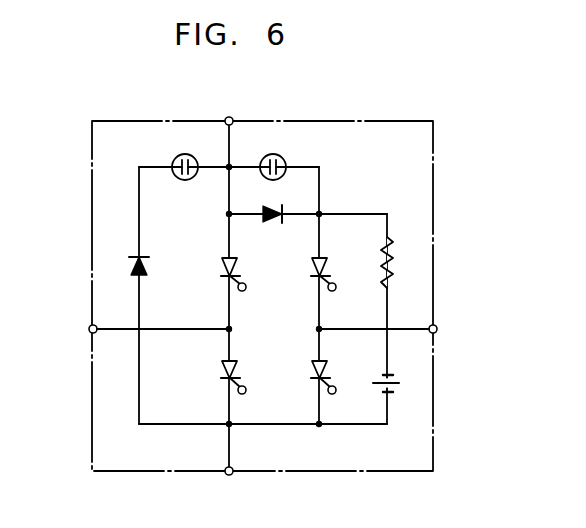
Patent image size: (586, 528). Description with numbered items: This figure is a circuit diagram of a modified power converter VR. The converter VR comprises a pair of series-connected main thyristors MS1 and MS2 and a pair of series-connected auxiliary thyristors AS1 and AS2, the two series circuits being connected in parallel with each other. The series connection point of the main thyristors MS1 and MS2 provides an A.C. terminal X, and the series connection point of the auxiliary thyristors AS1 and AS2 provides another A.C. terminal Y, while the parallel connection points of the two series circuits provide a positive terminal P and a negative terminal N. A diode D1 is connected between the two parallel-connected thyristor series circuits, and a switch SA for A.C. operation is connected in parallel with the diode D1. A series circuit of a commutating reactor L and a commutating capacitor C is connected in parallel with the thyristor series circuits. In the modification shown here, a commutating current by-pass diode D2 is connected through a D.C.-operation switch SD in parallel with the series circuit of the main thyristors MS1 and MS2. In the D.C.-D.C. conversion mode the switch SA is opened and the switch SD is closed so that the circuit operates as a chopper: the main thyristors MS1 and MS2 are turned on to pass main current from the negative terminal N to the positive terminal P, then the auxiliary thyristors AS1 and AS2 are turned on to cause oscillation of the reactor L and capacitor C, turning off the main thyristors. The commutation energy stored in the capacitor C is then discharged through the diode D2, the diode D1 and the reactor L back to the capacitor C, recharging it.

The power converter VR is at (356, 121).
The negative terminal N is at (229, 117).
The positive terminal P is at (230, 475).
The A.C. terminal X is at (90, 332).
The A.C. terminal Y is at (436, 332).
The D.C.-operation switch SD is at (181, 153).
The switch for A.C. operation SA is at (276, 155).
The diode D1 is at (280, 207).
The commutating current by-pass diode D2 is at (148, 260).
The main thyristor MS1 is at (262, 271).
The main thyristor MS2 is at (262, 374).
The auxiliary thyristor AS1 is at (352, 271).
The auxiliary thyristor AS2 is at (352, 374).
The commutating reactor L is at (395, 262).
The commutating capacitor C is at (409, 386).